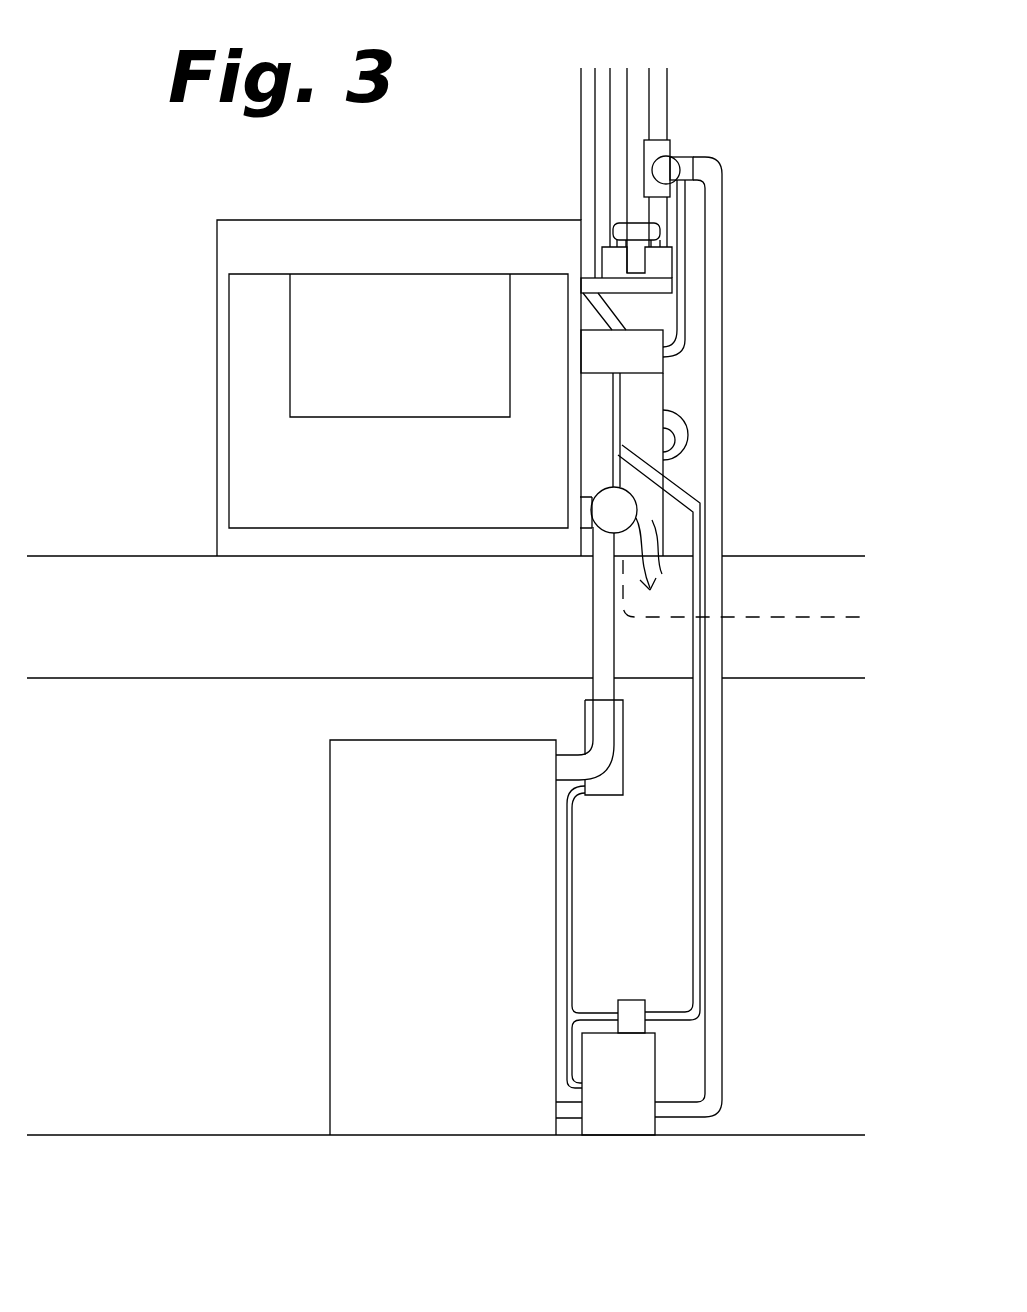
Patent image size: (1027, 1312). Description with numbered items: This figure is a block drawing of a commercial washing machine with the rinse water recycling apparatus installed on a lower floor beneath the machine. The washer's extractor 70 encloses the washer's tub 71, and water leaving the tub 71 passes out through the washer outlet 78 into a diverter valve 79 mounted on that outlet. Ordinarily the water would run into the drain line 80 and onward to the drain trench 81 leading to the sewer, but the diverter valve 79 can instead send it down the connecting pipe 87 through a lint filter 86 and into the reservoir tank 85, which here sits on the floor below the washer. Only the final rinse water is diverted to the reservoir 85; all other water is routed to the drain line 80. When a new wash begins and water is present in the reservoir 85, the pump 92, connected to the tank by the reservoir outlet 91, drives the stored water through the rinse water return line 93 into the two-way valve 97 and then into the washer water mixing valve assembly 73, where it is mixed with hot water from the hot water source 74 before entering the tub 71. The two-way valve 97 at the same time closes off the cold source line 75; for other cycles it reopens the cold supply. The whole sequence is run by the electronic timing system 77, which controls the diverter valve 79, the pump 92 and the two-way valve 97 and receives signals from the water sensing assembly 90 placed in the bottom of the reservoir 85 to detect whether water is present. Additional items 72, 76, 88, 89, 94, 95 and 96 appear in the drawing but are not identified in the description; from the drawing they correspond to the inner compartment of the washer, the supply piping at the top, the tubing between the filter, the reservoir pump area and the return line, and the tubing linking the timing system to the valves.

The washer's extractor 70 is at (371, 219).
The washer's tub 71 is at (384, 477).
The compartment 72 is at (377, 352).
The washer water mixing valve assembly 73 is at (660, 287).
The hot water source 74 is at (617, 67).
The cold source line 75 is at (658, 100).
The supply line 76 is at (578, 84).
The electronic timing system 77 is at (609, 367).
The washer outlet 78 is at (585, 507).
The diverter valve 79 is at (601, 523).
The drain line 80 is at (661, 564).
The drain trench 81 is at (762, 600).
The reservoir tank 85 is at (415, 927).
The lint filter 86 is at (628, 741).
The connecting pipe 87 is at (600, 617).
The pipe 88 is at (574, 888).
The valve 89 is at (645, 998).
The water sensing assembly 90 is at (563, 1044).
The reservoir outlet 91 is at (566, 1111).
The pump 92 is at (602, 1097).
The rinse water return line 93 is at (722, 292).
The tube 94 is at (620, 401).
The tube 95 is at (613, 420).
The tube 96 is at (665, 352).
The two way valve 97 is at (674, 154).